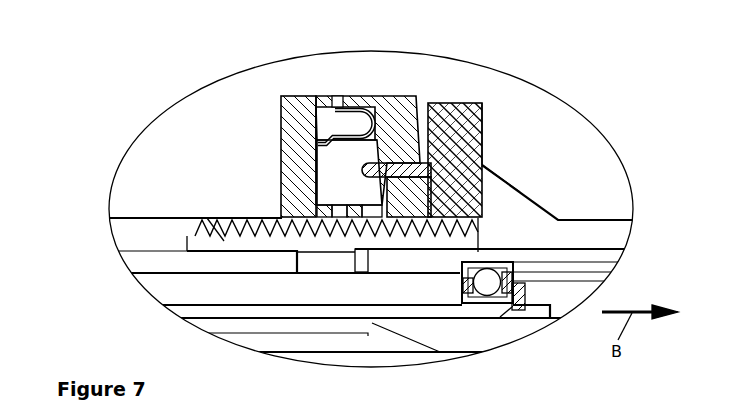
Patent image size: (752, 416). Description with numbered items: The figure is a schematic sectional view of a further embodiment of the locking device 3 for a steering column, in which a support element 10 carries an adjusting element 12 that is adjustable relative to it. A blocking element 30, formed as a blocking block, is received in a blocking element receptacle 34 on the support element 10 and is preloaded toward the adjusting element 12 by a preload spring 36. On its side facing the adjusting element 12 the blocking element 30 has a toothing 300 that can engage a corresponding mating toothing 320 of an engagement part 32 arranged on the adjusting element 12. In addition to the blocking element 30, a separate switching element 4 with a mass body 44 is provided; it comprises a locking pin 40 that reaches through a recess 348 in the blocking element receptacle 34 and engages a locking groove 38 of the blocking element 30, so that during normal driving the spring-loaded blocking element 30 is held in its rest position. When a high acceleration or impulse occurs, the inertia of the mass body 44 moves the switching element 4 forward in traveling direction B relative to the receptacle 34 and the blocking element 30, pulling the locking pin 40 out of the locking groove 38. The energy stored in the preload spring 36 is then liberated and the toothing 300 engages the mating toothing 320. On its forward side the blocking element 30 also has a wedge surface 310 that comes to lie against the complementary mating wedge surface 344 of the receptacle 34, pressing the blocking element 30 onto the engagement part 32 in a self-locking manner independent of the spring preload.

The locking device 3 is at (350, 118).
The switching element 4 is at (471, 97).
The support element 10 is at (518, 223).
The adjusting element 12 is at (172, 265).
The blocking element 30 is at (347, 163).
The engagement part 32 is at (163, 218).
The blocking element receptacle 34 is at (305, 143).
The preload spring 36 is at (352, 108).
The locking groove 38 is at (316, 163).
The locking pin 40 is at (368, 128).
The mass body 44 is at (448, 127).
The toothing 300 is at (303, 227).
The wedge surface 310 is at (483, 133).
The mating toothing 320 is at (208, 218).
The mating wedge surface 344 is at (484, 164).
The recess 348 is at (408, 162).